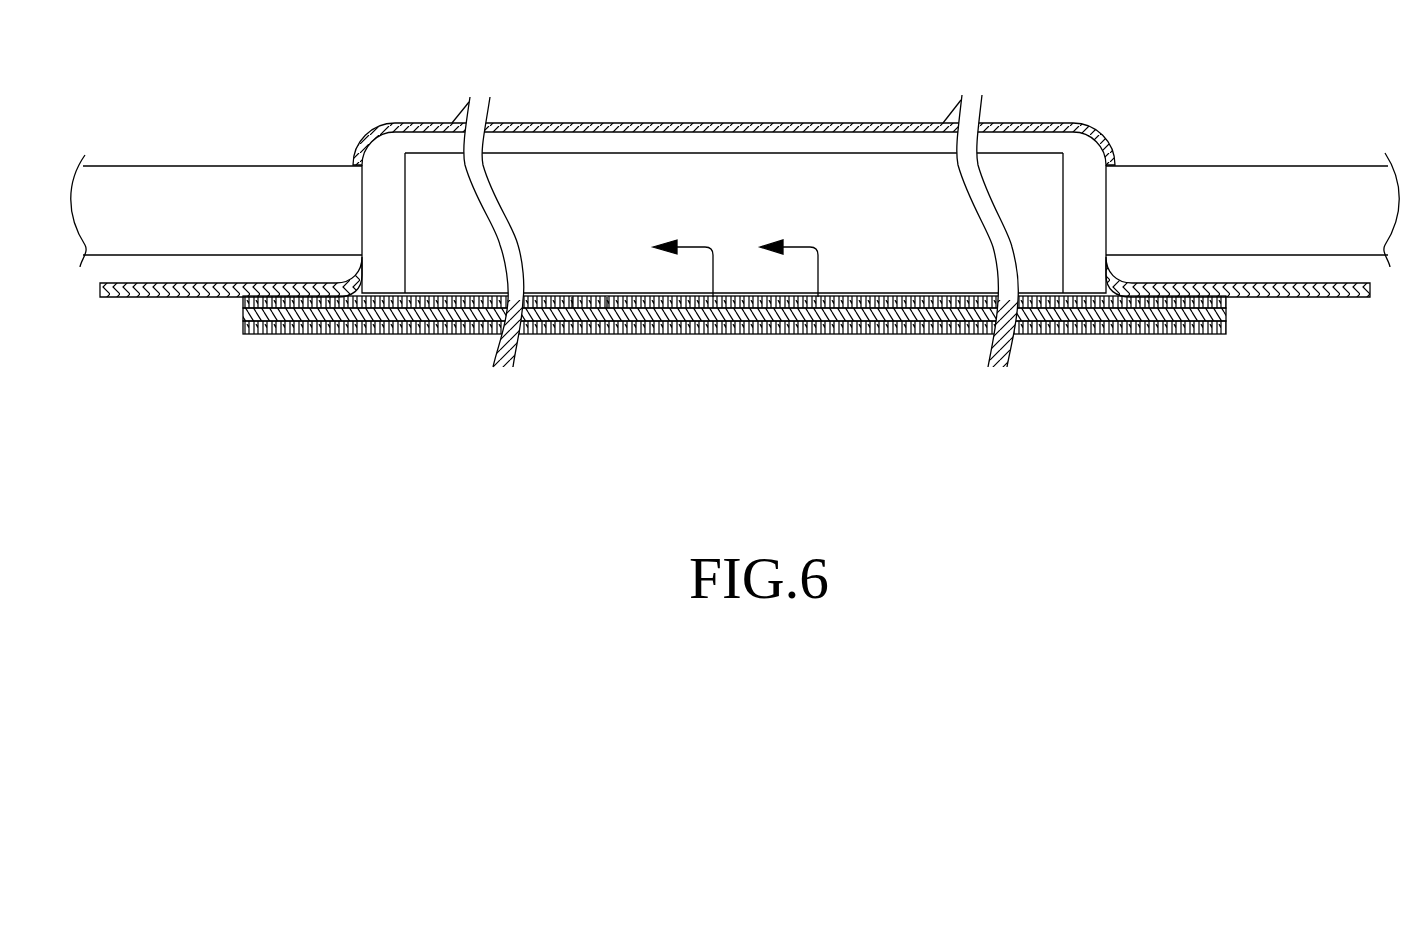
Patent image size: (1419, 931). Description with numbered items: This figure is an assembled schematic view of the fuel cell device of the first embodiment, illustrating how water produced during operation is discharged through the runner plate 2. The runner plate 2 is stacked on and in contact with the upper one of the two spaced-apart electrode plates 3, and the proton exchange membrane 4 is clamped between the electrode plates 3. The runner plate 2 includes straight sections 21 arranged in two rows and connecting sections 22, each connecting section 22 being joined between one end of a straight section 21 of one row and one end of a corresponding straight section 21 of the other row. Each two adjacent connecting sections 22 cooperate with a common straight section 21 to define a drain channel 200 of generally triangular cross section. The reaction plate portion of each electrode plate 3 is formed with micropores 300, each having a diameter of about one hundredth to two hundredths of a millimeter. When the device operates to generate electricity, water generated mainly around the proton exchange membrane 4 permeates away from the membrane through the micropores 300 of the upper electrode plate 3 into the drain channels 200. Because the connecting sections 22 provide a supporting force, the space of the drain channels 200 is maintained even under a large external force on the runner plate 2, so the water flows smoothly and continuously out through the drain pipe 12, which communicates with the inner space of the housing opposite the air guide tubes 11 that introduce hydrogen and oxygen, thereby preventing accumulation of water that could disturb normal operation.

The runner plate 2 is at (818, 122).
The straight section 21 is at (573, 153).
The connecting section 22 is at (887, 175).
The drain channel 200 is at (737, 195).
The electrode plate 3 is at (918, 298).
The micropore 300 is at (607, 298).
The proton exchange membrane 4 is at (1218, 315).
The air guide tube 11 is at (1247, 170).
The drain pipe 12 is at (175, 172).